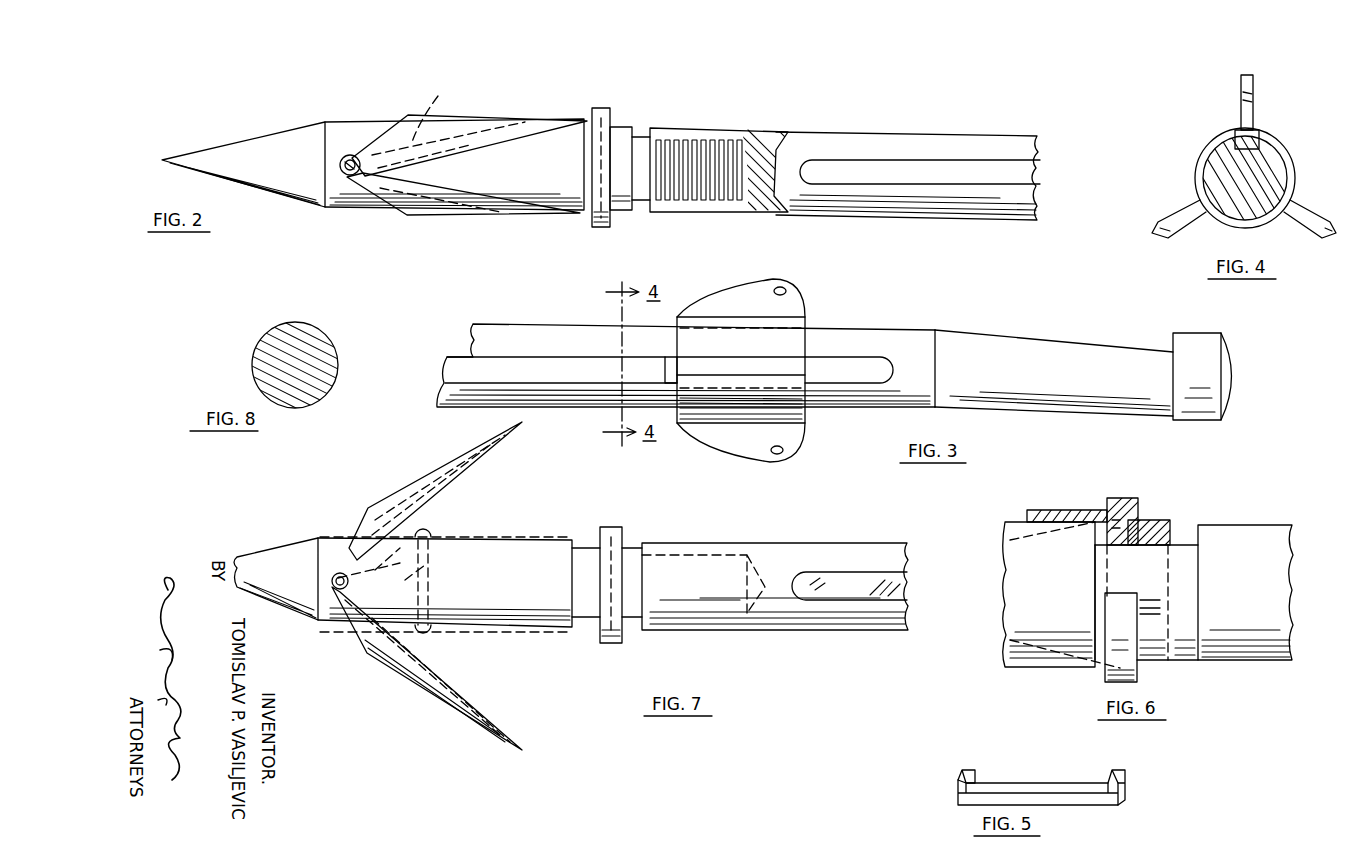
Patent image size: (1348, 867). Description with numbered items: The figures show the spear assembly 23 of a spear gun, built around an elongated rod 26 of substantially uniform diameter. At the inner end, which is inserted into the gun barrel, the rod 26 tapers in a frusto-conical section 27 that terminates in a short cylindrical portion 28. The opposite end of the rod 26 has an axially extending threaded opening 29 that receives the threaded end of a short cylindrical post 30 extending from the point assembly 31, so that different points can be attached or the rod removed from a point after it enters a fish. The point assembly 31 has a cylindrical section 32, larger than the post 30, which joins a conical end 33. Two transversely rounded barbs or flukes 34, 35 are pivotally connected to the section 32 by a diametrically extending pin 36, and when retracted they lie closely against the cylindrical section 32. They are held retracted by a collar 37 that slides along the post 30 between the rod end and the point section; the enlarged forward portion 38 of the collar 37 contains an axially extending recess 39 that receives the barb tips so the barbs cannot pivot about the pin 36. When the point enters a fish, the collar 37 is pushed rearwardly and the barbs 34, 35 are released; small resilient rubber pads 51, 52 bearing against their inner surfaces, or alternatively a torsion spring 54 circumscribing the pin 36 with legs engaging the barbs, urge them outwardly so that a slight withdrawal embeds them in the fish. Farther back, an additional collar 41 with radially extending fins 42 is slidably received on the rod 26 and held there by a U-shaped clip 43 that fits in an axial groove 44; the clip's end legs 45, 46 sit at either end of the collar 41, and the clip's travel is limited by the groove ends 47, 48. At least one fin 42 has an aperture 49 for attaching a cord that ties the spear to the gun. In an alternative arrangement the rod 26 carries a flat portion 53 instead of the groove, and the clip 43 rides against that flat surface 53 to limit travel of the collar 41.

In FIG. 2, the spear assembly 23 is at (768, 112).
In FIG. 2, the elongated rod 26 is at (870, 136).
In FIG. 4, the elongated rod 26 is at (1272, 172).
In FIG. 8, the elongated rod 26 is at (328, 355).
In FIG. 3, the elongated rod 26 is at (510, 330).
In FIG. 7, the elongated rod 26 is at (805, 628).
In FIG. 6, the elongated rod 26 is at (1235, 535).
In FIG. 3, the frusto-conical section 27 is at (1048, 348).
In FIG. 3, the short cylindrical portion 28 is at (1215, 380).
In FIG. 2, the threaded opening 29 is at (718, 206).
In FIG. 7, the threaded opening 29 is at (690, 555).
In FIG. 2, the cylindrical post 30 is at (672, 195).
In FIG. 7, the cylindrical post 30 is at (712, 612).
In FIG. 6, the cylindrical post 30 is at (1178, 632).
In FIG. 2, the point assembly 31 is at (356, 112).
In FIG. 7, the point assembly 31 is at (337, 631).
In FIG. 2, the cylindrical section 32 is at (360, 200).
In FIG. 7, the cylindrical section 32 is at (565, 538).
In FIG. 6, the cylindrical section 32 is at (1012, 600).
In FIG. 2, the conical end 33 is at (260, 143).
In FIG. 7, the conical end 33 is at (298, 546).
In FIG. 2, the barb 34 is at (482, 120).
In FIG. 7, the barb 34 is at (443, 472).
In FIG. 6, the barb 34 is at (1046, 510).
In FIG. 2, the barb 35 is at (460, 210).
In FIG. 7, the barb 35 is at (415, 680).
In FIG. 6, the barb 35 is at (1045, 668).
In FIG. 2, the pin 36 is at (345, 172).
In FIG. 7, the pin 36 is at (332, 578).
In FIG. 2, the collar 37 is at (622, 115).
In FIG. 7, the collar 37 is at (606, 645).
In FIG. 6, the collar 37 is at (1165, 515).
In FIG. 2, the enlarged forward portion 38 is at (600, 226).
In FIG. 7, the enlarged forward portion 38 is at (615, 530).
In FIG. 6, the enlarged forward portion 38 is at (1117, 498).
In FIG. 2, the recess 39 is at (575, 218).
In FIG. 7, the recess 39 is at (610, 550).
In FIG. 6, the recess 39 is at (1114, 518).
In FIG. 4, the collar 41 is at (1292, 142).
In FIG. 3, the collar 41 is at (815, 305).
In FIG. 4, the fins 42 is at (1245, 106).
In FIG. 3, the fins 42 is at (755, 288).
In FIG. 4, the U-shaped clip 43 is at (1238, 136).
In FIG. 3, the U-shaped clip 43 is at (778, 360).
In FIG. 5, the U-shaped clip 43 is at (1030, 775).
In FIG. 2, the groove 44 is at (1004, 181).
In FIG. 4, the groove 44 is at (1222, 150).
In FIG. 3, the groove 44 is at (472, 368).
In FIG. 4, the end leg 45 is at (1256, 138).
In FIG. 3, the end leg 45 is at (668, 360).
In FIG. 5, the end leg 45 is at (958, 778).
In FIG. 3, the end leg 46 is at (830, 372).
In FIG. 5, the end leg 46 is at (1124, 778).
In FIG. 2, the groove end 47 is at (818, 162).
In FIG. 3, the groove end 48 is at (895, 345).
In FIG. 4, the aperture 49 is at (1258, 90).
In FIG. 3, the aperture 49 is at (786, 290).
In FIG. 7, the resilient pad 51 is at (432, 530).
In FIG. 7, the resilient pad 52 is at (430, 636).
In FIG. 8, the flat portion 53 is at (290, 324).
In FIG. 7, the flat portion 53 is at (900, 590).
In FIG. 2, the torsion spring 54 is at (437, 109).
In FIG. 7, the torsion spring 54 is at (372, 558).